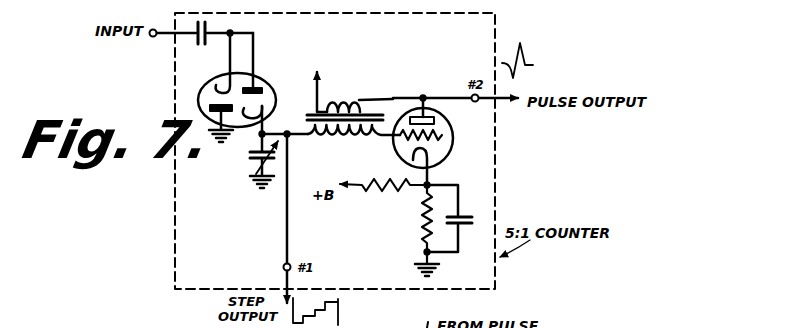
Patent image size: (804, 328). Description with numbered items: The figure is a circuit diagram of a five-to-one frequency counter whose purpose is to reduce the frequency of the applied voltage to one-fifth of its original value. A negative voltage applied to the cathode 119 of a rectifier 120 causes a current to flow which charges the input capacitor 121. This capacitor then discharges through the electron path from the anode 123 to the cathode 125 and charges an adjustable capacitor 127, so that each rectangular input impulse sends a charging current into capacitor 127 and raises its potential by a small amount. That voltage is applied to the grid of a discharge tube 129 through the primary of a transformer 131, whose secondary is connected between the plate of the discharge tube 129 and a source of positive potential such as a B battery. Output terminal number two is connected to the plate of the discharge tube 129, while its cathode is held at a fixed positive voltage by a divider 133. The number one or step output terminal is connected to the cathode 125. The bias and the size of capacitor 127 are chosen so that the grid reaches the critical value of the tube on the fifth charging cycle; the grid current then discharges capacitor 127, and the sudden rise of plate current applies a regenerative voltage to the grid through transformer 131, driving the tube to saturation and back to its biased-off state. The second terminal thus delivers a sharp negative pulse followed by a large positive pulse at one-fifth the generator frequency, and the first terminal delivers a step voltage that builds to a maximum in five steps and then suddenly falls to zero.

The cathode 119 is at (212, 86).
The rectifier 120 is at (213, 133).
The input capacitor 121 is at (204, 29).
The anode 123 is at (262, 86).
The cathode 125 is at (266, 104).
The adjustable capacitor 127 is at (249, 159).
The discharge tube 129 is at (478, 126).
The transformer 131 is at (384, 119).
The divider 133 is at (405, 240).